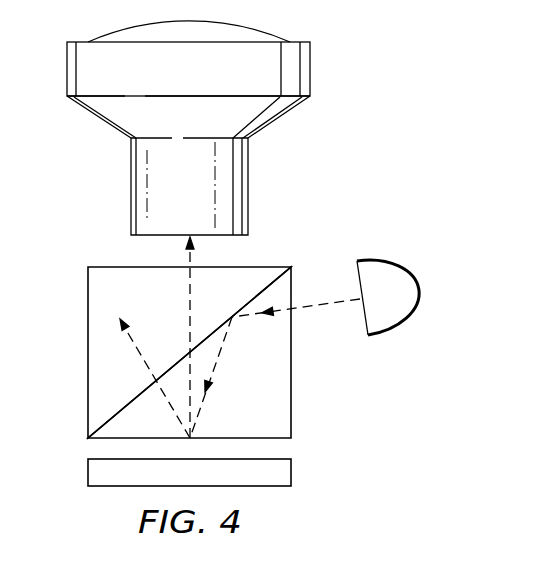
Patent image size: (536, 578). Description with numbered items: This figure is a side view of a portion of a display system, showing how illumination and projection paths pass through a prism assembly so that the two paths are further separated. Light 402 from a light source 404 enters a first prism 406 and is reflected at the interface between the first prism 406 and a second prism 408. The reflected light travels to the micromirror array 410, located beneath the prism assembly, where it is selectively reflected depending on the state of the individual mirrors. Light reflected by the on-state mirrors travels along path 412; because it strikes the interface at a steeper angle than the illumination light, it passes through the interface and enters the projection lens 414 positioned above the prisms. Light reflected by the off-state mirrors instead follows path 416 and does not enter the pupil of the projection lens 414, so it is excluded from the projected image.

The light 402 is at (315, 307).
The light source 404 is at (385, 260).
The first prism 406 is at (292, 383).
The second prism 408 is at (90, 385).
The micromirror array 410 is at (88, 472).
The path 412 is at (188, 310).
The projection lens 414 is at (311, 70).
The path 416 is at (139, 350).